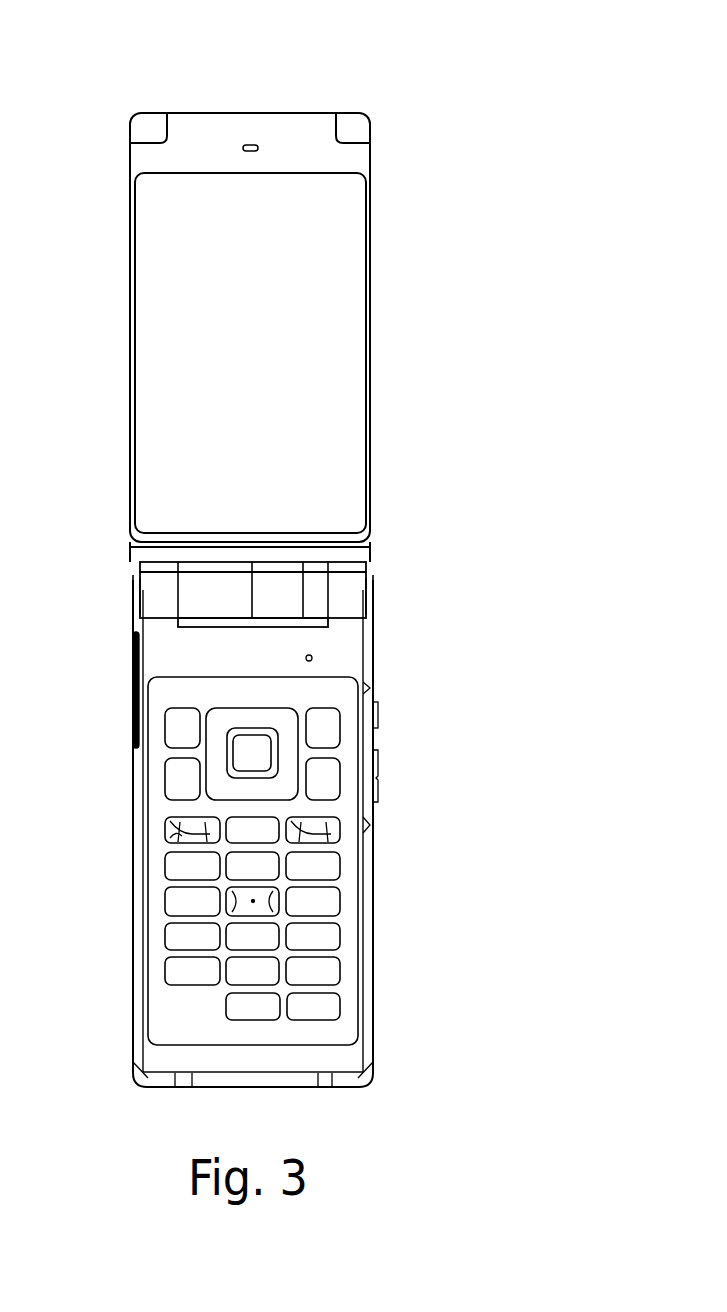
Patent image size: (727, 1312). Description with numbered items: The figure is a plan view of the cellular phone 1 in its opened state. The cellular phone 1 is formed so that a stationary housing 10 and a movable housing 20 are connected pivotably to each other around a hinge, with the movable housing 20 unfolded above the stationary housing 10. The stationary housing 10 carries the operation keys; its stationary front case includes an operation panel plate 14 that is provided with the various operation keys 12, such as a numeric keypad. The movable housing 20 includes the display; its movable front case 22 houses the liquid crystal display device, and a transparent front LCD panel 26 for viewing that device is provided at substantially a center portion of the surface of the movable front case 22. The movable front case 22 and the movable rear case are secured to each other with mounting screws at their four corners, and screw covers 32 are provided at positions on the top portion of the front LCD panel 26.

The cellular phone 1 is at (398, 82).
The stationary housing 10 is at (115, 843).
The operation keys 12 is at (276, 768).
The operation panel plate 14 is at (350, 928).
The movable housing 20 is at (114, 346).
The movable front case 22 is at (360, 161).
The front LCD panel 26 is at (358, 360).
The screw covers 32 is at (136, 128).